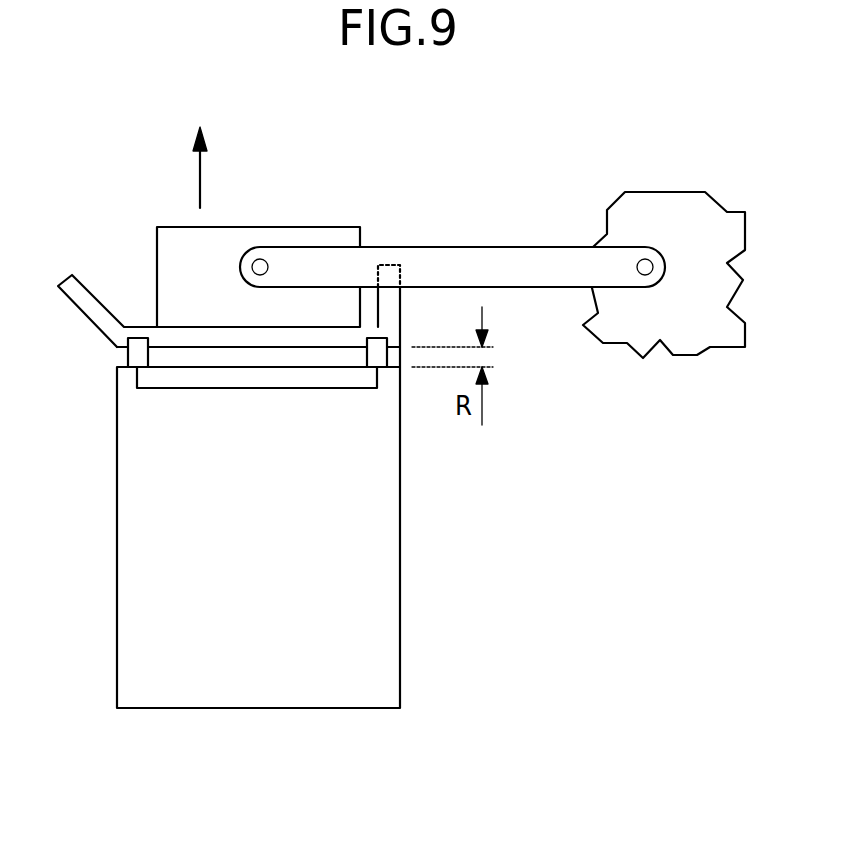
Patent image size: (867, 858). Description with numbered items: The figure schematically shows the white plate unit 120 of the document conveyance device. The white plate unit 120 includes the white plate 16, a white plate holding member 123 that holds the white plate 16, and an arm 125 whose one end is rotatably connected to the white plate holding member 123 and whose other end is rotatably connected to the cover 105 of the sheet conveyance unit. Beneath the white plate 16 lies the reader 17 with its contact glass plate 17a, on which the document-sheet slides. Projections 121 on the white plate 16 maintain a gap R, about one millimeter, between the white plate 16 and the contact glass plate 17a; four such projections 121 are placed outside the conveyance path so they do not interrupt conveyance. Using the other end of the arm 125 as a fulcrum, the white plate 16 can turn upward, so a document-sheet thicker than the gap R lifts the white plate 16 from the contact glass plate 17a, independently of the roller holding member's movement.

The cover 105 is at (683, 200).
The white plate unit 120 is at (369, 165).
The projections 121 is at (138, 343).
The white plate holding member 123 is at (288, 233).
The arm 125 is at (530, 255).
The white plate 16 is at (78, 300).
The reader 17 is at (291, 537).
The contact glass plate 17a is at (280, 388).